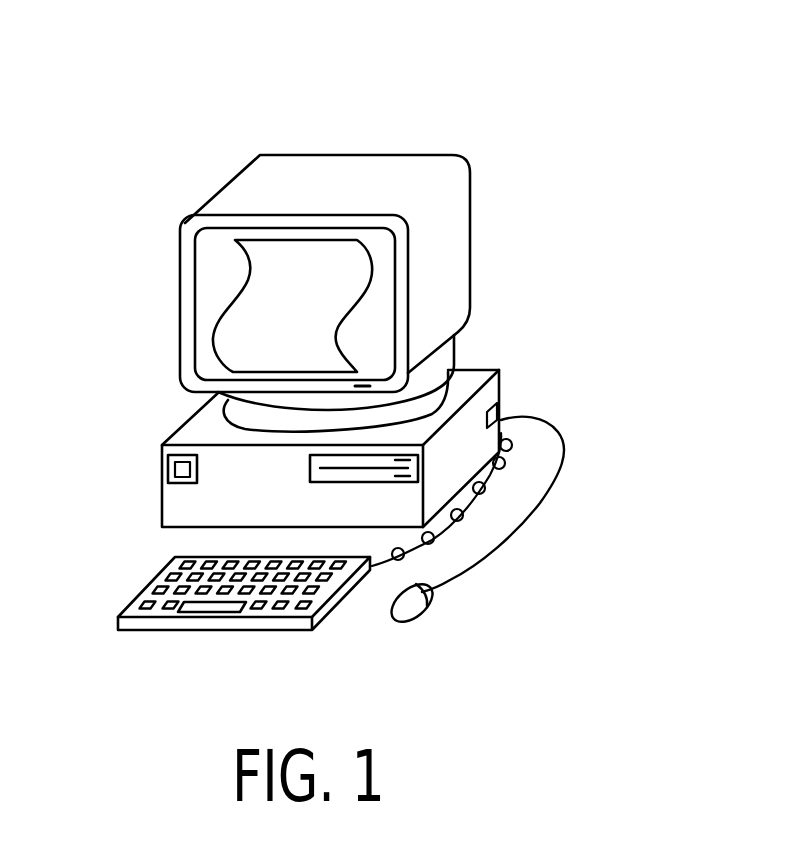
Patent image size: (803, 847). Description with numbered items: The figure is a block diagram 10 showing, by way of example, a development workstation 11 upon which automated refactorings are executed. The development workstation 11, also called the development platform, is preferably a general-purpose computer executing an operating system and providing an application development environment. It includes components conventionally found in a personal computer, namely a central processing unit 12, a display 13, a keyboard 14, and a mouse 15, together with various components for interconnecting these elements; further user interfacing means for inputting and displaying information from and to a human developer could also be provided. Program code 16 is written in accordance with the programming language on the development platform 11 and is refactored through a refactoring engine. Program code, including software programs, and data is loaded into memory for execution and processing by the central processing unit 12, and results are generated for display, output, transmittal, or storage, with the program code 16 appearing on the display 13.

The block diagram 10 is at (452, 92).
The development workstation 11 is at (165, 163).
The central processing unit 12 is at (160, 483).
The display 13 is at (378, 153).
The keyboard 14 is at (118, 615).
The mouse 15 is at (428, 603).
The program code 16 is at (226, 332).